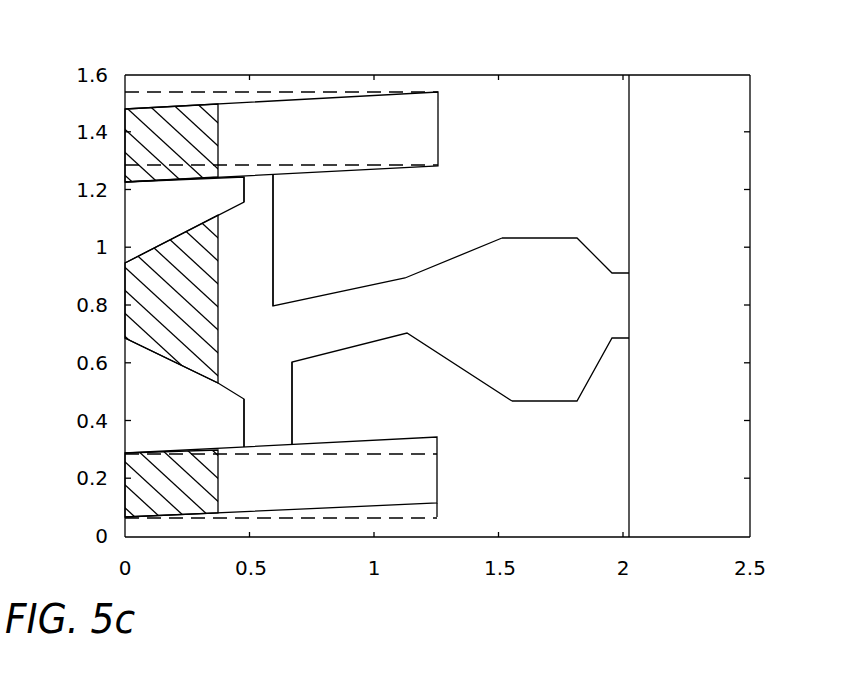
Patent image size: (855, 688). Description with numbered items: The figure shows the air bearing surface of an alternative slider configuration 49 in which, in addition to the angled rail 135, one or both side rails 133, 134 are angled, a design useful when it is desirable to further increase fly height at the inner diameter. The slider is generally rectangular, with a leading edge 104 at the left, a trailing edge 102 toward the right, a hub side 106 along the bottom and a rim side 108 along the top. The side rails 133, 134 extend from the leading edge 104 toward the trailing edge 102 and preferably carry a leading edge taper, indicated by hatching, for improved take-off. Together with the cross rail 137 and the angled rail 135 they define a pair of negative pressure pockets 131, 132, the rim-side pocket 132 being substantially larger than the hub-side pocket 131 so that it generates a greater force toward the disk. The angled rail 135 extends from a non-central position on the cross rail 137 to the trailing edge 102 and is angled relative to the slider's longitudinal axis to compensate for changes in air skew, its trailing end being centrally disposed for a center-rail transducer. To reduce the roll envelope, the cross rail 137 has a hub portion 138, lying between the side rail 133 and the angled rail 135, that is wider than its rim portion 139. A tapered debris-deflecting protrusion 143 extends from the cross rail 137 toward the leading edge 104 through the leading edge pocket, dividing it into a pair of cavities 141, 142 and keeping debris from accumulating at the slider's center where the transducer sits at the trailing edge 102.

The semiconductor laser device 49 is at (718, 606).
The trailing edge 102 is at (630, 300).
The leading edge 104 is at (125, 282).
The hub side 106 is at (455, 539).
The rim side 108 is at (465, 74).
The negative pressure pocket 131 is at (371, 394).
The negative pressure pocket 132 is at (340, 254).
The side rail 133 is at (298, 491).
The side rail 134 is at (313, 144).
The angled rail 135 is at (505, 334).
The cross rail 137 is at (233, 354).
The hub portion 138 is at (270, 421).
The rim portion 139 is at (258, 196).
The cavity 141 is at (159, 431).
The cavity 142 is at (151, 219).
The debris-deflecting protrusion 143 is at (159, 314).